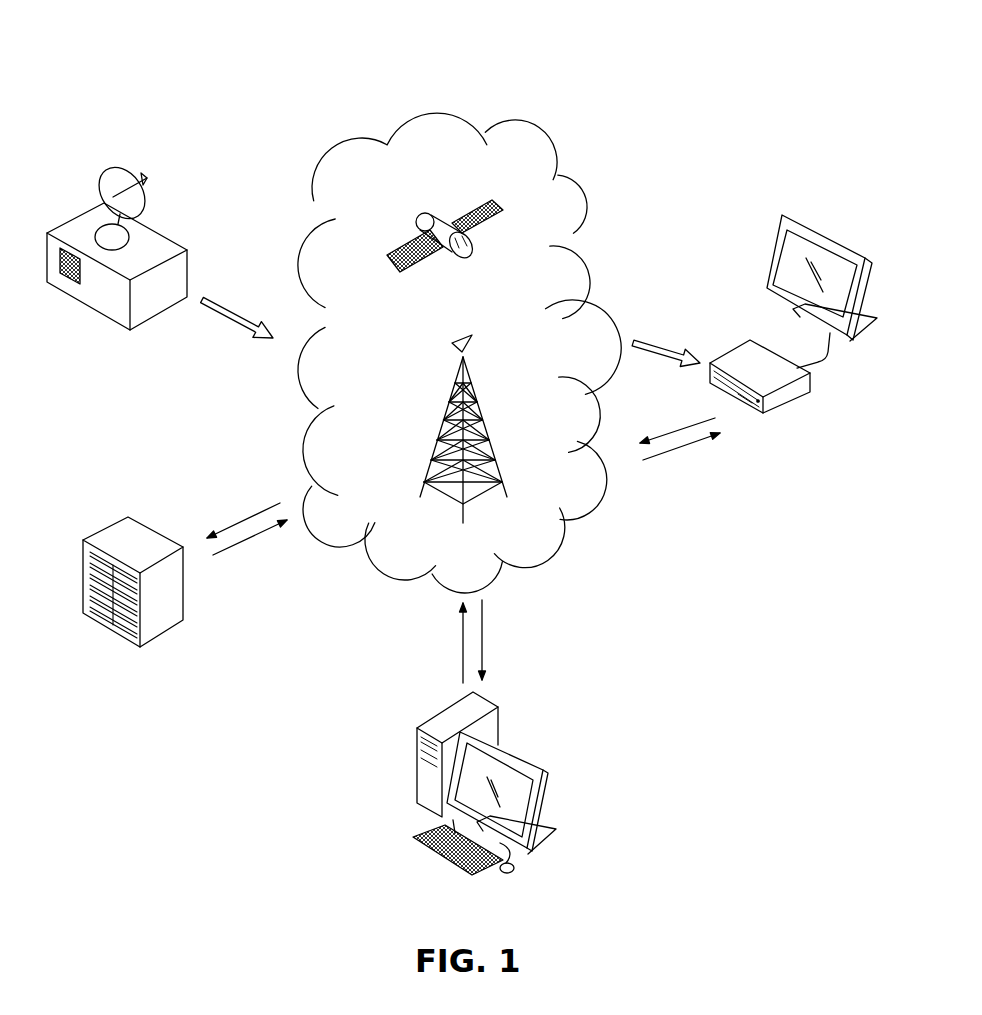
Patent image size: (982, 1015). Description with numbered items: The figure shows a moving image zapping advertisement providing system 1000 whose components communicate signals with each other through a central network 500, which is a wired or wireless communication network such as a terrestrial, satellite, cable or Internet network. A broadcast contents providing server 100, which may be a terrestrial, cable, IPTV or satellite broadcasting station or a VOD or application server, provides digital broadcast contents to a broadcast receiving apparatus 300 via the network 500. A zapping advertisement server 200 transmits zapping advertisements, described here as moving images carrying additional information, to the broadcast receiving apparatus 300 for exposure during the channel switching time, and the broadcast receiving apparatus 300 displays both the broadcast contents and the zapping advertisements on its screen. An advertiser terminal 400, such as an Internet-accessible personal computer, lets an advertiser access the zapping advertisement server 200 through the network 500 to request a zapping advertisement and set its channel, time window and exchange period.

The moving image zapping advertisement providing system 1000 is at (456, 43).
The broadcast contents providing server 100 is at (152, 233).
The zapping advertisement server 200 is at (118, 530).
The broadcast receiving apparatus 300 is at (750, 343).
The advertiser terminal 400 is at (493, 723).
The network 500 is at (536, 125).